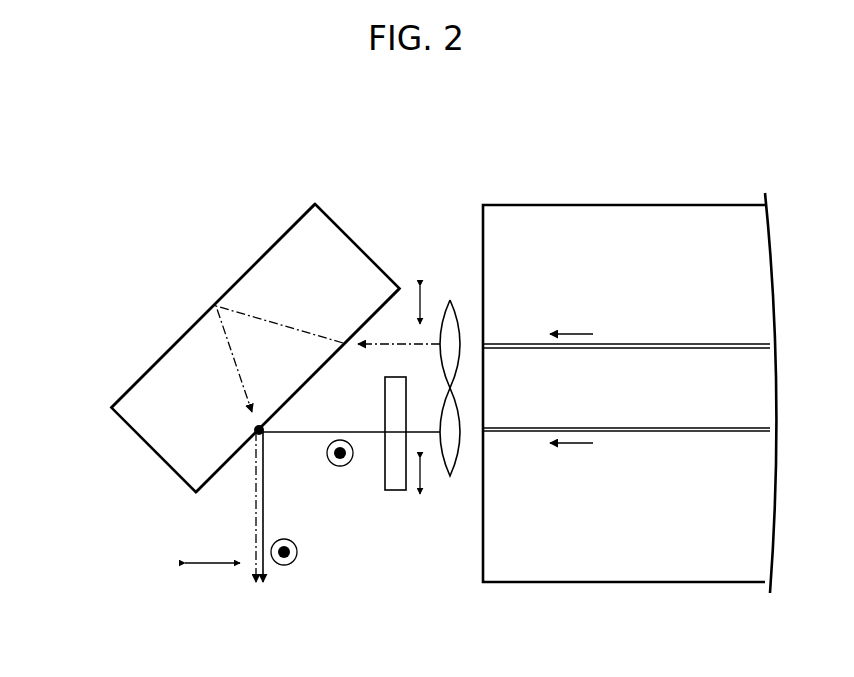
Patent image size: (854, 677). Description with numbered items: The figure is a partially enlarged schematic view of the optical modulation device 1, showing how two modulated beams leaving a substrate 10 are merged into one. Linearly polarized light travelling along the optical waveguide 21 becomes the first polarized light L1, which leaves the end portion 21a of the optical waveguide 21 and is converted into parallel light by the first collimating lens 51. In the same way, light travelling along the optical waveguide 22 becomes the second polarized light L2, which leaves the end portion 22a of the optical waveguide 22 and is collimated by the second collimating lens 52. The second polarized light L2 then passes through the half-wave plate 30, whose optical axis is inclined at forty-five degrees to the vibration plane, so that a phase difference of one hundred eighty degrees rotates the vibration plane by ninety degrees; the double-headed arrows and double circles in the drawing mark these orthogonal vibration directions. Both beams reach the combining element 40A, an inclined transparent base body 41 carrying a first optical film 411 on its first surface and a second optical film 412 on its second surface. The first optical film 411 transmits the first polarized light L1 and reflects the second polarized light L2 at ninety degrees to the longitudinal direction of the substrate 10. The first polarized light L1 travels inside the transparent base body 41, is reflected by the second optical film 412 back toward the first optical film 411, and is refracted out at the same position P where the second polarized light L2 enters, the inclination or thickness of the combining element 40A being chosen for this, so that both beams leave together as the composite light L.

The optical modulation device 1 is at (755, 143).
The substrate 10 is at (621, 213).
The optical waveguide 21 is at (703, 344).
The end portion of the optical waveguide 21a is at (483, 346).
The optical waveguide 22 is at (664, 432).
The end portion of the optical waveguide 22a is at (483, 432).
The half-wave plate 30 is at (402, 482).
The combining element 40A is at (150, 200).
The transparent base body 41 is at (336, 240).
The first optical film 411 is at (218, 470).
The second optical film 412 is at (148, 375).
The first collimating lens 51 is at (450, 306).
The second collimating lens 52 is at (450, 466).
The first polarized light L1 is at (247, 312).
The second polarized light L2 is at (284, 433).
The position P is at (268, 428).
The composite light L is at (279, 595).